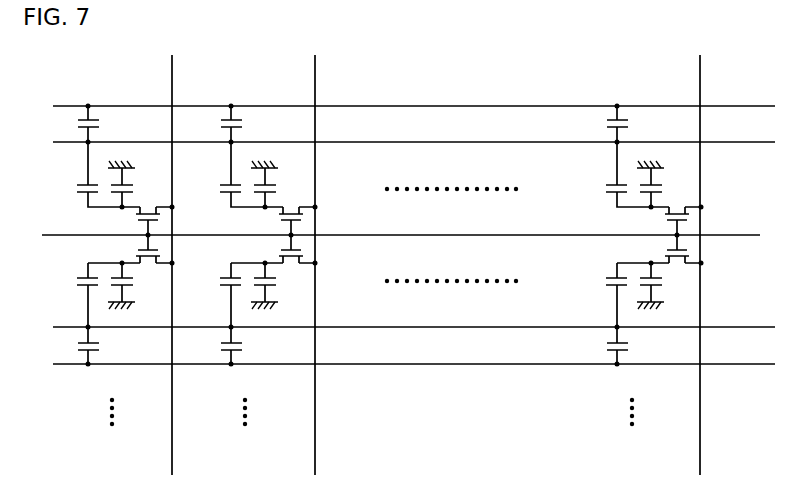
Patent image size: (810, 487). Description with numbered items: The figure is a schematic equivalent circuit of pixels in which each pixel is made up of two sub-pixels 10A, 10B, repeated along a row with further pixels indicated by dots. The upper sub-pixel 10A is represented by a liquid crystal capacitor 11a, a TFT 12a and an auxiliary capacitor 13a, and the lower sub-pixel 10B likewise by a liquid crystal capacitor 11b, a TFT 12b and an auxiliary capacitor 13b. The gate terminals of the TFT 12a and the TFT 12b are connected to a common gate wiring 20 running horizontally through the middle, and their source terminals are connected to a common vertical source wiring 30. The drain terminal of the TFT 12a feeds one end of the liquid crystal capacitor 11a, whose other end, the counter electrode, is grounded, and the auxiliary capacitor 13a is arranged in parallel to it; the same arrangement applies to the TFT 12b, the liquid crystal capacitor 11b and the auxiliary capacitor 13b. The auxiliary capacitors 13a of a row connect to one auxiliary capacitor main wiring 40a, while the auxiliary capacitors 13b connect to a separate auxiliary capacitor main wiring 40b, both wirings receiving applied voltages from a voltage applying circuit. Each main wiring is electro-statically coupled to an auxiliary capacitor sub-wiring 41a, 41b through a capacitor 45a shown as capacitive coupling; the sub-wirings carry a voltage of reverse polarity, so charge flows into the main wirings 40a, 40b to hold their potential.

The sub-pixel 10A is at (72, 174).
The sub-pixel 10B is at (73, 302).
The liquid crystal capacitor 11a is at (138, 187).
The liquid crystal capacitor 11b is at (137, 281).
The TFT 12a is at (138, 220).
The TFT 12b is at (138, 250).
The auxiliary capacitor 13a is at (77, 190).
The auxiliary capacitor 13b is at (76, 278).
The capacitor 45a is at (100, 126).
The gate wiring 20 is at (733, 235).
The source wiring 30 is at (172, 458).
The auxiliary capacitor main wiring 40a is at (717, 142).
The auxiliary capacitor main wiring 40b is at (717, 328).
The auxiliary capacitor sub-wiring 41a is at (717, 106).
The auxiliary capacitor sub-wiring 41b is at (717, 364).